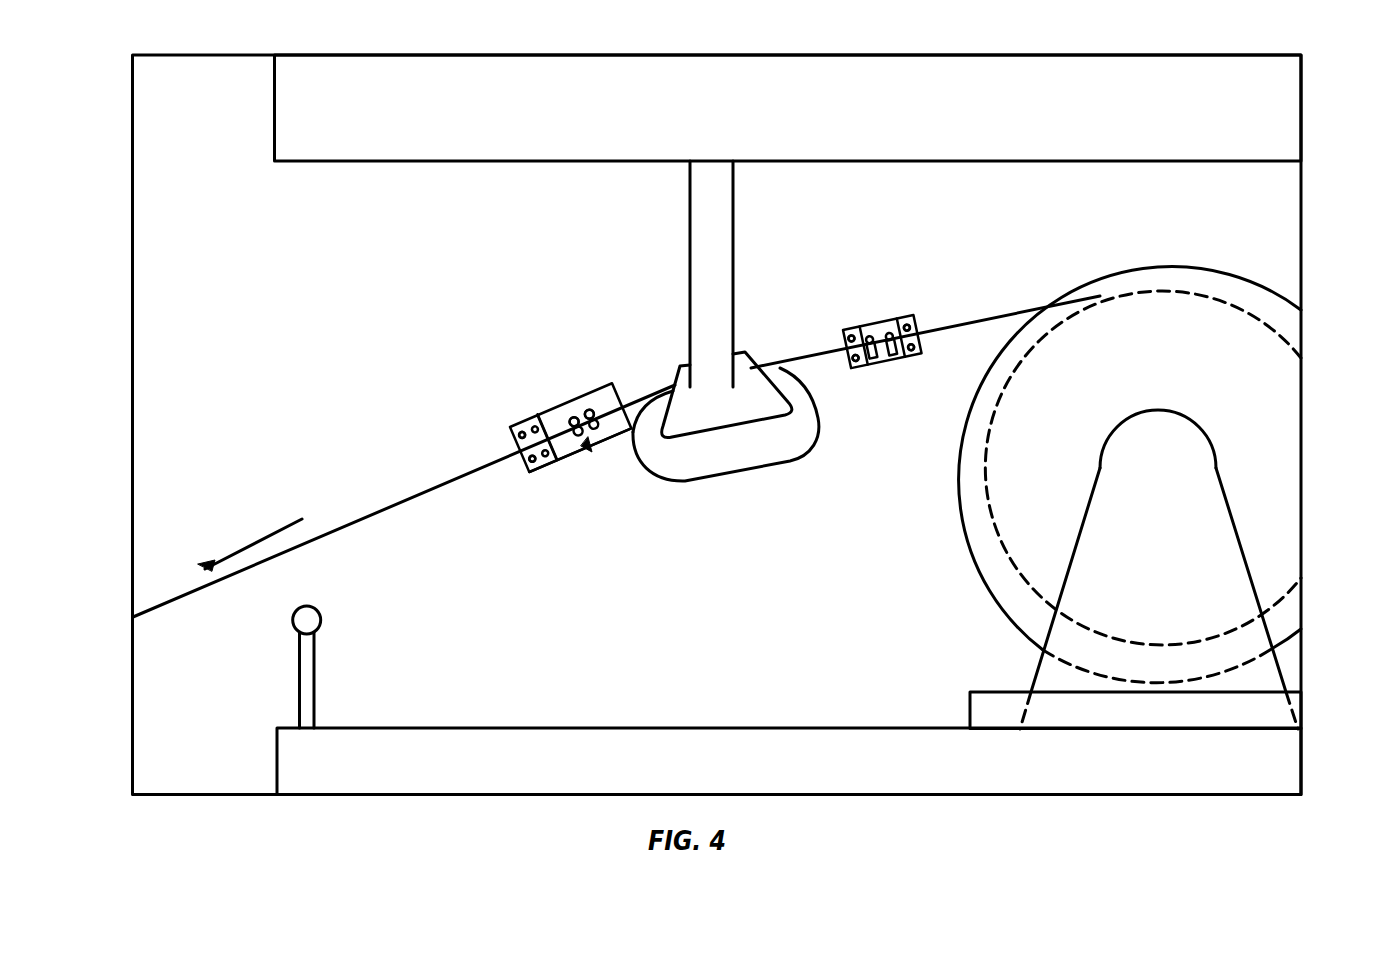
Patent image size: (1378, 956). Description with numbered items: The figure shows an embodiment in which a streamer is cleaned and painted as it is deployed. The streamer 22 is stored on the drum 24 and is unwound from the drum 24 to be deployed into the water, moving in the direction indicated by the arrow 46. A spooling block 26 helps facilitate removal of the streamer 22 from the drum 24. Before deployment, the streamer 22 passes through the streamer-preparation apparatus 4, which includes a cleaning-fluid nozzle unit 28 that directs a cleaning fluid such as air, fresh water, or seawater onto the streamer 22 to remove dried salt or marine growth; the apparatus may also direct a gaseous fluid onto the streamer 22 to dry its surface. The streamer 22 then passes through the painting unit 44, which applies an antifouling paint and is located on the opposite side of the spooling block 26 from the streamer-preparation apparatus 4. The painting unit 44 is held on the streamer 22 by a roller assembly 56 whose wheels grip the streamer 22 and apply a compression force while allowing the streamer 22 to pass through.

The streamer-preparation apparatus 4 is at (896, 310).
The streamer 22 is at (395, 498).
The drum 24 is at (1283, 292).
The spooling block 26 is at (680, 368).
The cleaning-fluid nozzle unit 28 is at (896, 321).
The painting unit 44 is at (570, 384).
The arrow 46 is at (257, 538).
The roller assembly 56 is at (589, 443).